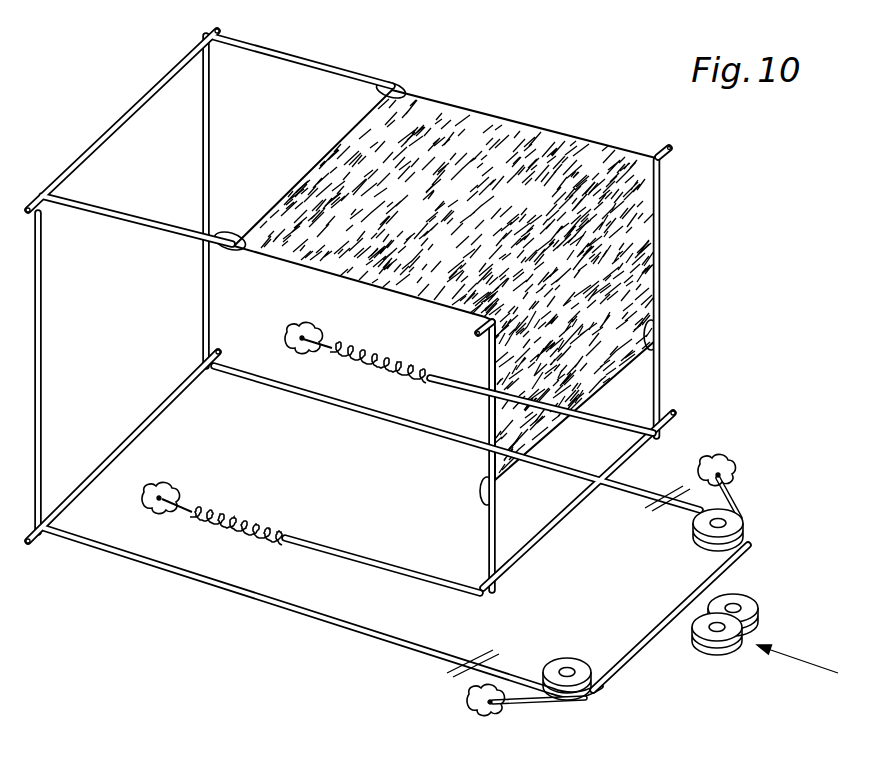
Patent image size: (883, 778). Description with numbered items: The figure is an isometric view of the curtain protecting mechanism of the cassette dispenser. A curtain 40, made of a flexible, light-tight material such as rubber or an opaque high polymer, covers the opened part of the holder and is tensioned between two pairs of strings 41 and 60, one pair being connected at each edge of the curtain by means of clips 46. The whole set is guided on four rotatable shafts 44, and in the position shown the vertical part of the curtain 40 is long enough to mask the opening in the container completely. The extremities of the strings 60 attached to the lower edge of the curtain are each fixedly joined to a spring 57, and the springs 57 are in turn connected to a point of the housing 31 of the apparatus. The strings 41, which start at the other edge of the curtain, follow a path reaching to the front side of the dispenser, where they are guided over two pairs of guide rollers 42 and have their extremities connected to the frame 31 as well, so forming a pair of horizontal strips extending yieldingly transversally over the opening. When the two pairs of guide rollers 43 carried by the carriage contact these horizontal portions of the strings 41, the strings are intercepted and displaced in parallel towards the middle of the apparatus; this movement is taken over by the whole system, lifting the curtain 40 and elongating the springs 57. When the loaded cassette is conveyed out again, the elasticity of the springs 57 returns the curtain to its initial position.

The housing 31 is at (292, 340).
The curtain 40 is at (562, 145).
The strings 41 is at (284, 62).
The guide rollers 42 is at (742, 524).
The guide rollers 43 is at (720, 657).
The rotatable shafts 44 is at (222, 30).
The clips 46 is at (400, 84).
The spring 57 is at (372, 352).
The strings 60 is at (660, 367).